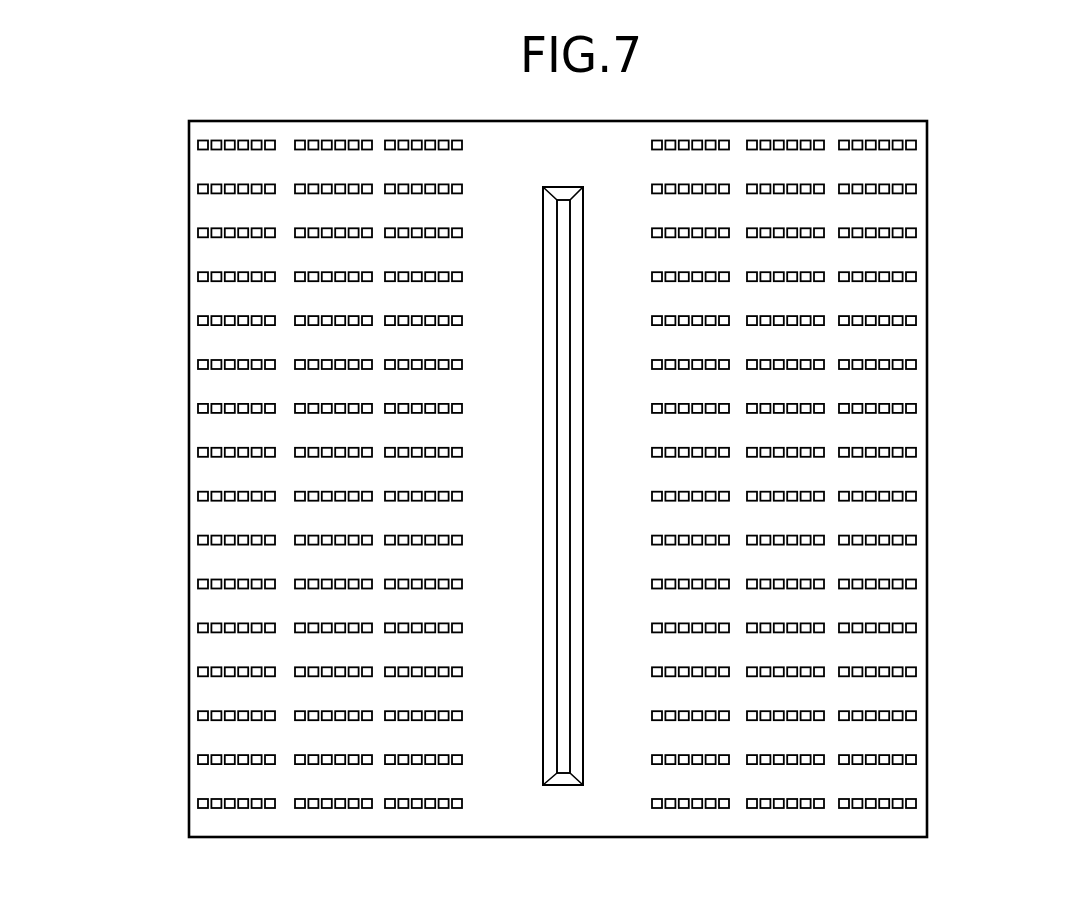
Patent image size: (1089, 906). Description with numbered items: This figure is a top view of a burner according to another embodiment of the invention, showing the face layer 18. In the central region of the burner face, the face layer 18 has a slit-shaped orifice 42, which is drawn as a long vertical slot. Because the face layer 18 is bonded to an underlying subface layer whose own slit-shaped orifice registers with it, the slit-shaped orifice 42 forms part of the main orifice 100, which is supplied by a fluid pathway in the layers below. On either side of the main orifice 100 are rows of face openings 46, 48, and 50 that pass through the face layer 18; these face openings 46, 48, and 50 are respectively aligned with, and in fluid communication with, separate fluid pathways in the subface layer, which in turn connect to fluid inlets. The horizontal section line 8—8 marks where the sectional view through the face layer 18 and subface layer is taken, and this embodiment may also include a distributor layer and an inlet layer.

The face layer 18 is at (917, 140).
The main orifice 100 is at (564, 210).
The slit-shaped orifice 42 is at (560, 785).
The face opening 46 is at (411, 808).
The face opening 48 is at (321, 808).
The face opening 50 is at (224, 808).
The section line 8— 8 is at (172, 673).